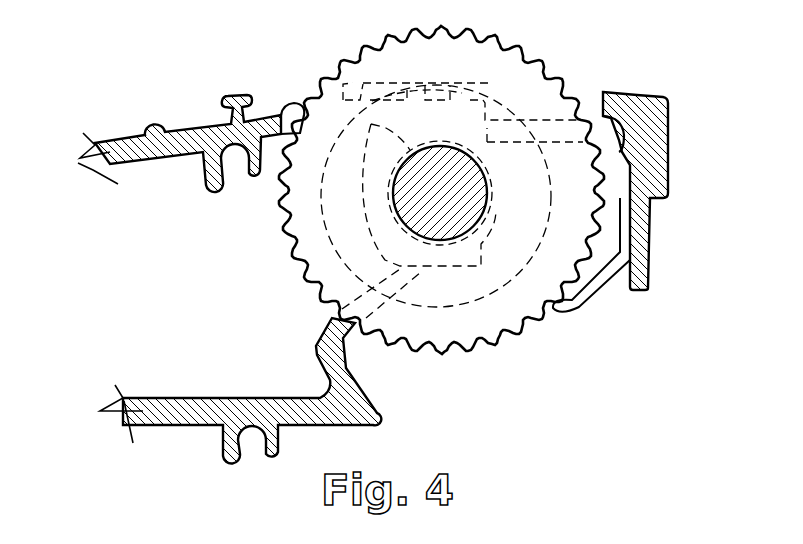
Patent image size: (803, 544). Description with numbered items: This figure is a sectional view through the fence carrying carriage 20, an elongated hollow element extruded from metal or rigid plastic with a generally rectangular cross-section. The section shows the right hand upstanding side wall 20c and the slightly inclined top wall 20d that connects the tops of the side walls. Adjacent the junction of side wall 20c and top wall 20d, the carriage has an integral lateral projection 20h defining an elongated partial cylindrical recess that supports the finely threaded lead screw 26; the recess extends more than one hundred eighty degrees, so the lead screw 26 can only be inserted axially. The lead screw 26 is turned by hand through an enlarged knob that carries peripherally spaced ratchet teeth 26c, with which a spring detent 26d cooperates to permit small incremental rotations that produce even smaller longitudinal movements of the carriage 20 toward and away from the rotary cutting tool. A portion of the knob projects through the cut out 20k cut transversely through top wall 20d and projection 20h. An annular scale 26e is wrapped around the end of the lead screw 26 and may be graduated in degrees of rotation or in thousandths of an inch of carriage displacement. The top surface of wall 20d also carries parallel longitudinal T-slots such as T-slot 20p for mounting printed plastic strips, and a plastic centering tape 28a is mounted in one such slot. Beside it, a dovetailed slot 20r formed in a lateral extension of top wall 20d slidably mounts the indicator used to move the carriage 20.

The fence carrying carriage 20 is at (369, 254).
The T-slot 20p is at (212, 120).
The top wall 20d is at (123, 136).
The cut out 20k is at (293, 102).
The side wall 20c is at (311, 343).
The lateral projection 20h is at (608, 90).
The dovetailed slot 20r is at (651, 231).
The lead screw 26 is at (422, 213).
The annular scale 26e is at (317, 248).
The ratchet teeth 26c is at (425, 350).
The spring detent 26d is at (584, 306).
The plastic centering tape 28a is at (393, 80).